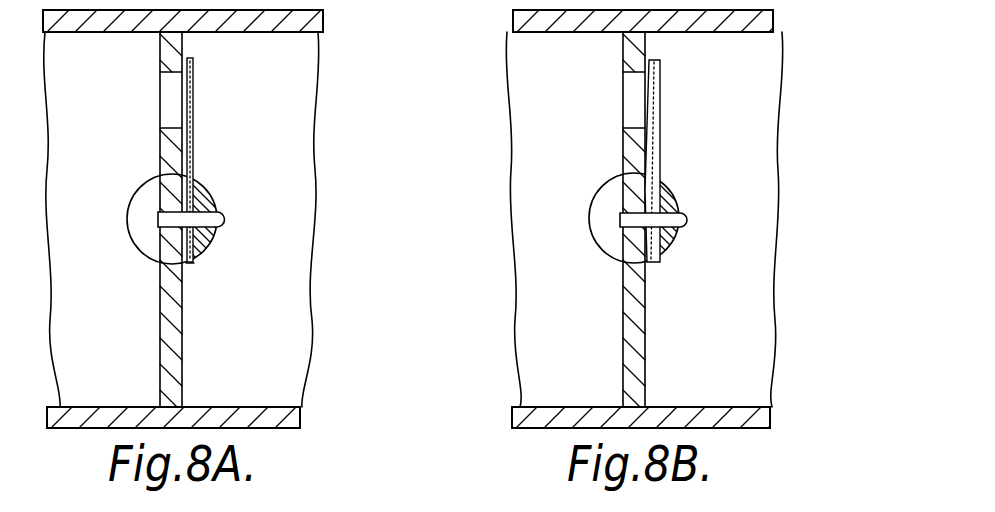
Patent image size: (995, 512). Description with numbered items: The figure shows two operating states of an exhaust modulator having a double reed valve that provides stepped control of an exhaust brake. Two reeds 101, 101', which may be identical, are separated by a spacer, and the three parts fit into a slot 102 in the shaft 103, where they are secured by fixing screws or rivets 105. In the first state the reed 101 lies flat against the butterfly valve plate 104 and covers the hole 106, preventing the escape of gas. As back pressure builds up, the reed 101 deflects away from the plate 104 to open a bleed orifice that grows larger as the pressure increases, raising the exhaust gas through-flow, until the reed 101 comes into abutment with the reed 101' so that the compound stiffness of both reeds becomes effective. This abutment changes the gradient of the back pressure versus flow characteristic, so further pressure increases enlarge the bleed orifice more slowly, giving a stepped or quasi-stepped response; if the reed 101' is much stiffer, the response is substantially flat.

In FIG. 8A, the reed 101 is at (139, 62).
In FIG. 8A, the reed 101' is at (223, 152).
In FIG. 8B, the reed 101' is at (696, 161).
In FIG. 8A, the slot 102 is at (188, 263).
In FIG. 8A, the shaft 103 is at (203, 193).
In FIG. 8B, the shaft 103 is at (680, 230).
In FIG. 8A, the butterfly valve plate 104 is at (160, 383).
In FIG. 8B, the butterfly valve plate 104 is at (623, 360).
In FIG. 8A, the fixing screws or rivets 105 is at (226, 216).
In FIG. 8B, the fixing screws or rivets 105 is at (688, 213).
In FIG. 8A, the hole 106 is at (160, 118).
In FIG. 8B, the hole 106 is at (623, 127).